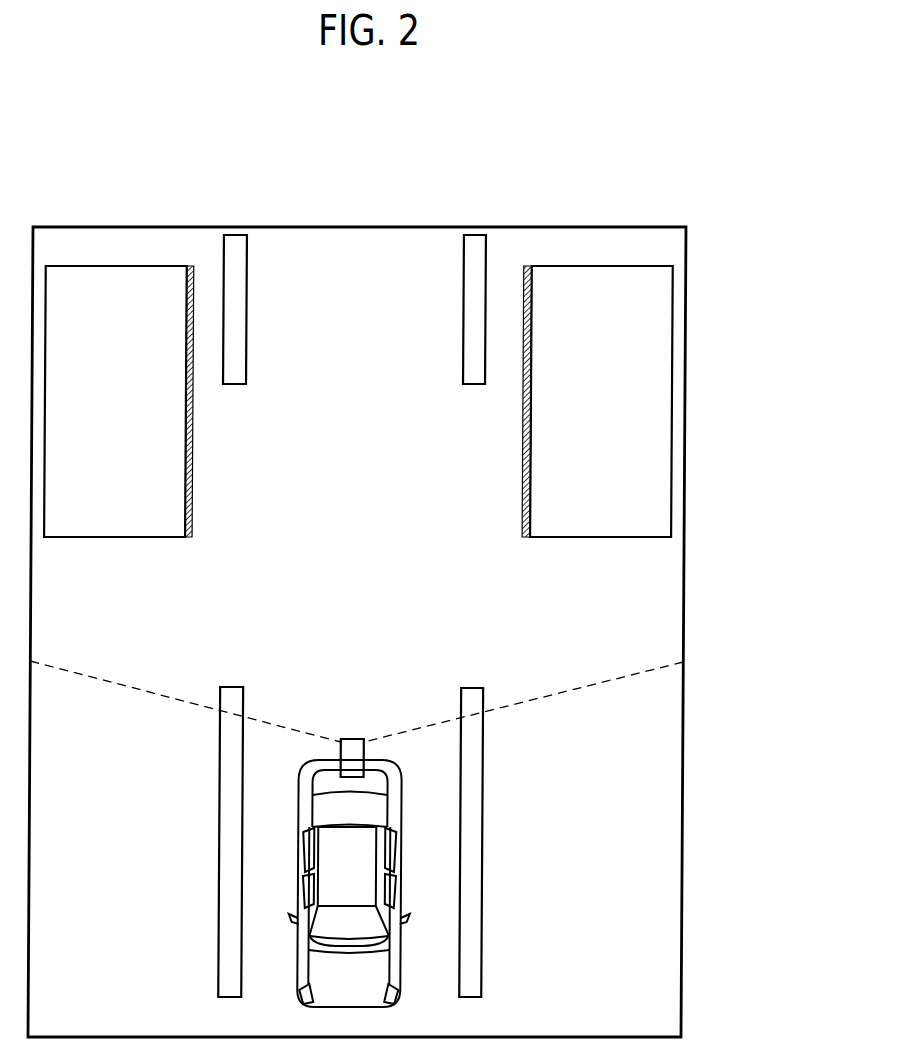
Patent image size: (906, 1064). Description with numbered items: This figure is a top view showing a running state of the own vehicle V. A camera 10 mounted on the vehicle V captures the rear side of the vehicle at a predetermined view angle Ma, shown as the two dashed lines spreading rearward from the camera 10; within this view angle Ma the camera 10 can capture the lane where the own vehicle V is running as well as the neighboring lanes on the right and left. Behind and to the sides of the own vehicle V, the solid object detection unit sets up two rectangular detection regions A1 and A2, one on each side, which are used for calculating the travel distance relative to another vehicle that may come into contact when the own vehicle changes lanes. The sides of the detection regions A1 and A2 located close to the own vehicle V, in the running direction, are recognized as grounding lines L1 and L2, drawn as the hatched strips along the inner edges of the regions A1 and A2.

The detection region A1 is at (108, 266).
The detection region A2 is at (673, 338).
The grounding line L1 is at (195, 287).
The grounding line L2 is at (523, 283).
The view angle Ma is at (588, 685).
The camera 10 is at (344, 749).
The vehicle V is at (402, 960).